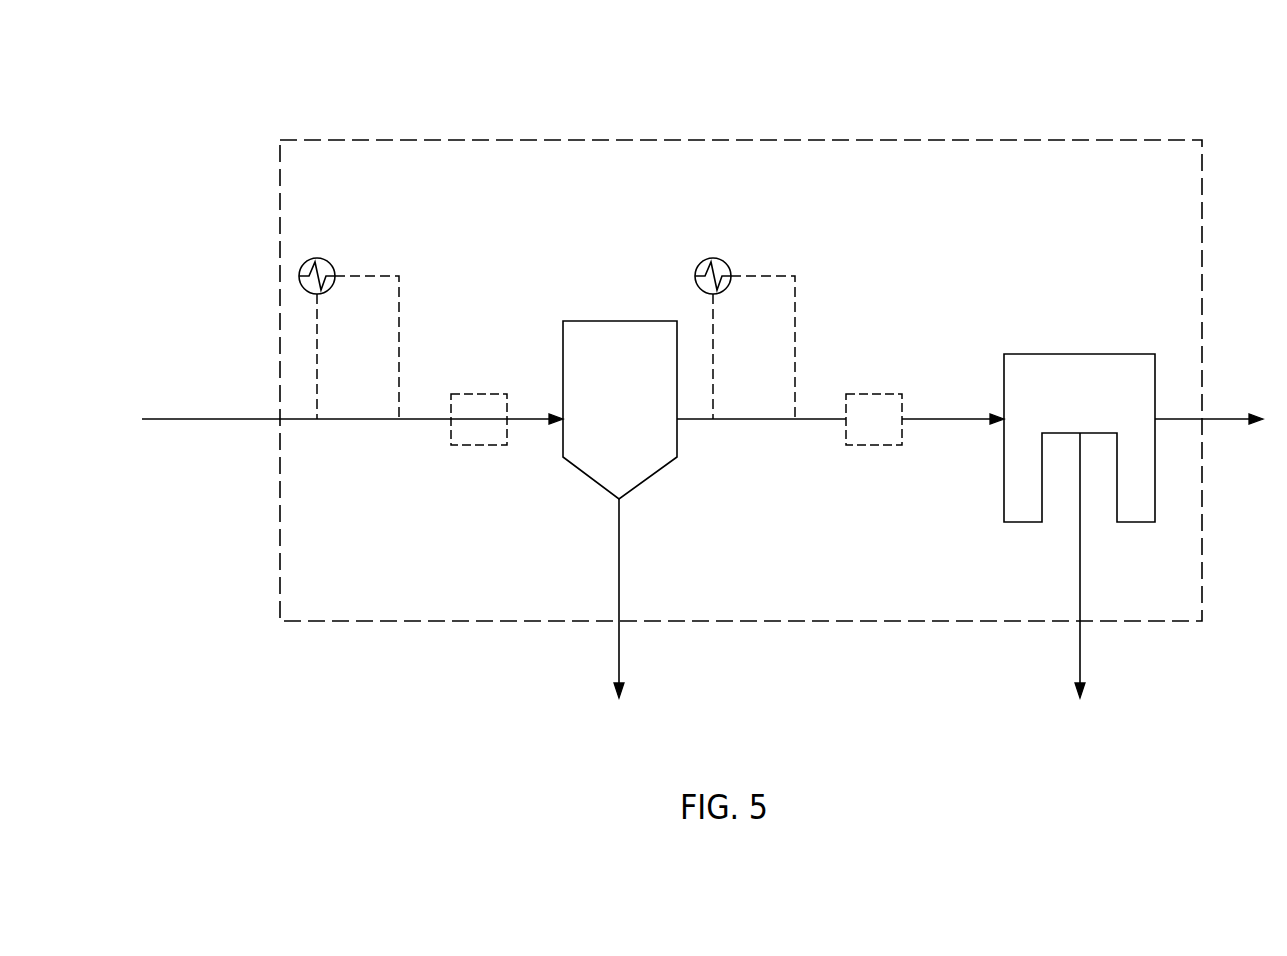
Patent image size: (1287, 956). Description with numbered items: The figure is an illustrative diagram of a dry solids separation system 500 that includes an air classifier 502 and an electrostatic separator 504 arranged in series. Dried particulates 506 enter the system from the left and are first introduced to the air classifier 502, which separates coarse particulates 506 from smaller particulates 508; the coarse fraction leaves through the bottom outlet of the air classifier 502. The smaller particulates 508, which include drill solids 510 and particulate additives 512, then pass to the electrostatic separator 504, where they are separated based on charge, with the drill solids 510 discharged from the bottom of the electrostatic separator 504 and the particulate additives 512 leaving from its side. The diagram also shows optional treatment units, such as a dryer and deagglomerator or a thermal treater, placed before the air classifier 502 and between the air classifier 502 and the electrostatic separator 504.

The dry solids separation system 500 is at (257, 78).
The air classifier 502 is at (639, 402).
The electrostatic separator 504 is at (1100, 405).
The dried particulates 506 is at (204, 421).
The smaller particulates 508 is at (948, 421).
The drill solids 510 is at (1080, 660).
The particulate additives 512 is at (1228, 421).